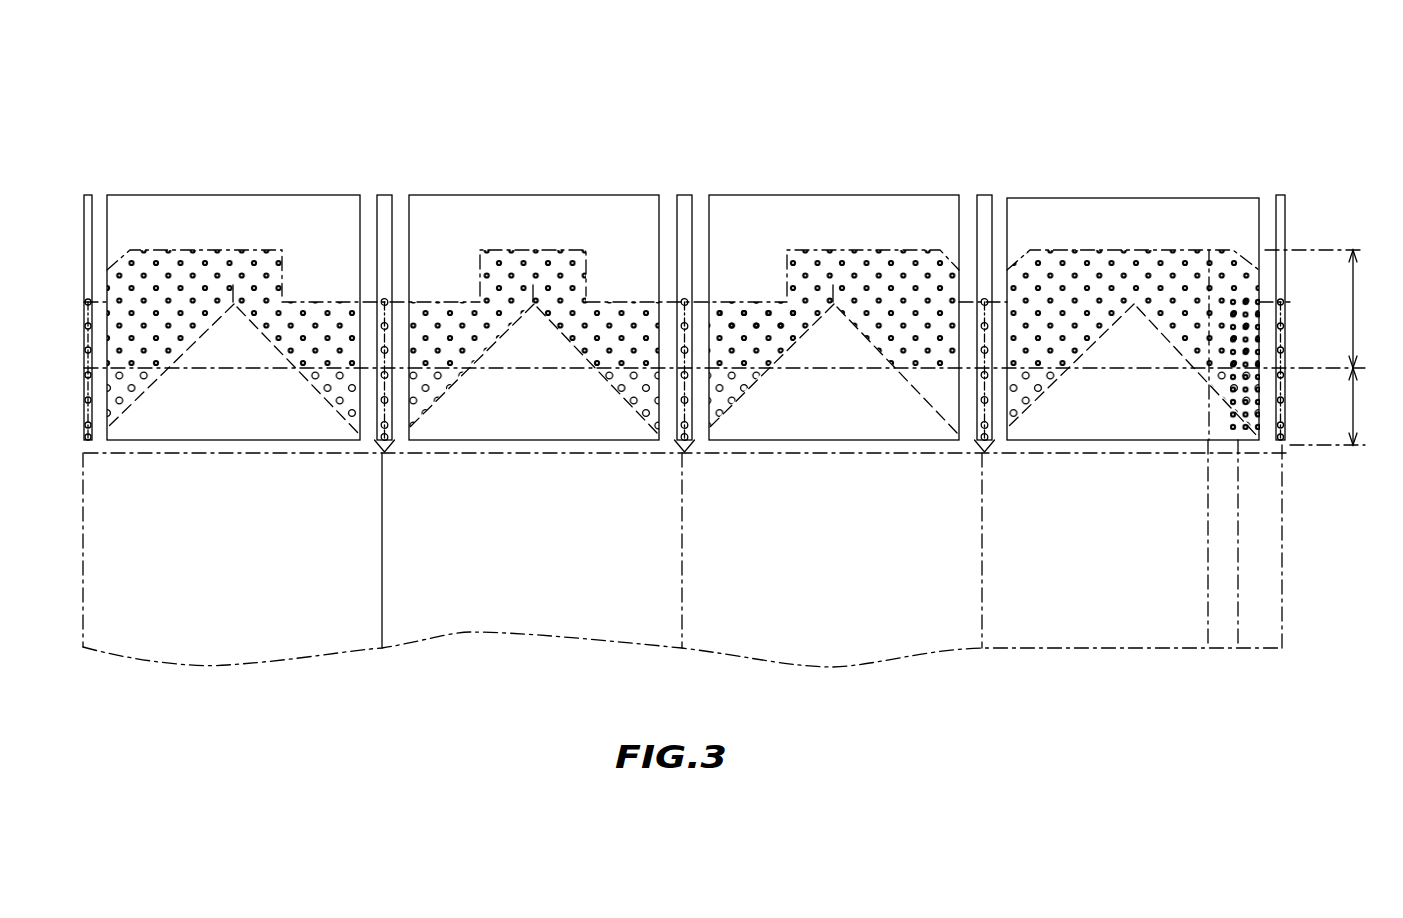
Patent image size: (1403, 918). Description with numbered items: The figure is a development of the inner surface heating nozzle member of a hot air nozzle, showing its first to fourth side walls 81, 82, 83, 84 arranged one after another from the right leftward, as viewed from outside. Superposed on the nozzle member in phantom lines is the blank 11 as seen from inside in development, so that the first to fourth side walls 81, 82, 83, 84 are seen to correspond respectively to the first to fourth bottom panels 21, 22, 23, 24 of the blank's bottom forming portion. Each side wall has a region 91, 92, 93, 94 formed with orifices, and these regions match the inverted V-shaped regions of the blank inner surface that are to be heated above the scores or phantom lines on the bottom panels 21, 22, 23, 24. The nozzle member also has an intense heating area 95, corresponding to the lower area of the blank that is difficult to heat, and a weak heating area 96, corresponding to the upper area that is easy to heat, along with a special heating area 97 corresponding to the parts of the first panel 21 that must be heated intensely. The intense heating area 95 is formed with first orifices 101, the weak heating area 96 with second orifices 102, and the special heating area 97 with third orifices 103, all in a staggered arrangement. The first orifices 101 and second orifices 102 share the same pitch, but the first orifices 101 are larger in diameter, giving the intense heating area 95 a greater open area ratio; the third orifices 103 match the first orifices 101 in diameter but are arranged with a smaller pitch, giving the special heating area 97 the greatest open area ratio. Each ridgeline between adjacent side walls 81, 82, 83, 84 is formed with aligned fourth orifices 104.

The blank 11 is at (839, 668).
The first bottom panel 21 is at (1037, 453).
The second bottom panel 22 is at (740, 453).
The third bottom panel 23 is at (437, 453).
The fourth bottom panel 24 is at (138, 453).
The first side wall 81 is at (1133, 198).
The second side wall 82 is at (833, 195).
The third side wall 83 is at (497, 195).
The fourth side wall 84 is at (233, 195).
The region formed with orifices 91 is at (887, 250).
The region formed with orifices 92 is at (282, 250).
The region formed with orifices 93 is at (1047, 250).
The region formed with orifices 94 is at (557, 250).
The intense heating area 95 is at (1353, 406).
The weak heating area 96 is at (1353, 309).
The special heating area 97 is at (1240, 400).
The first orifices 101 is at (733, 388).
The second orifices 102 is at (781, 315).
The third orifices 103 is at (1240, 425).
The fourth orifices 104 is at (680, 436).